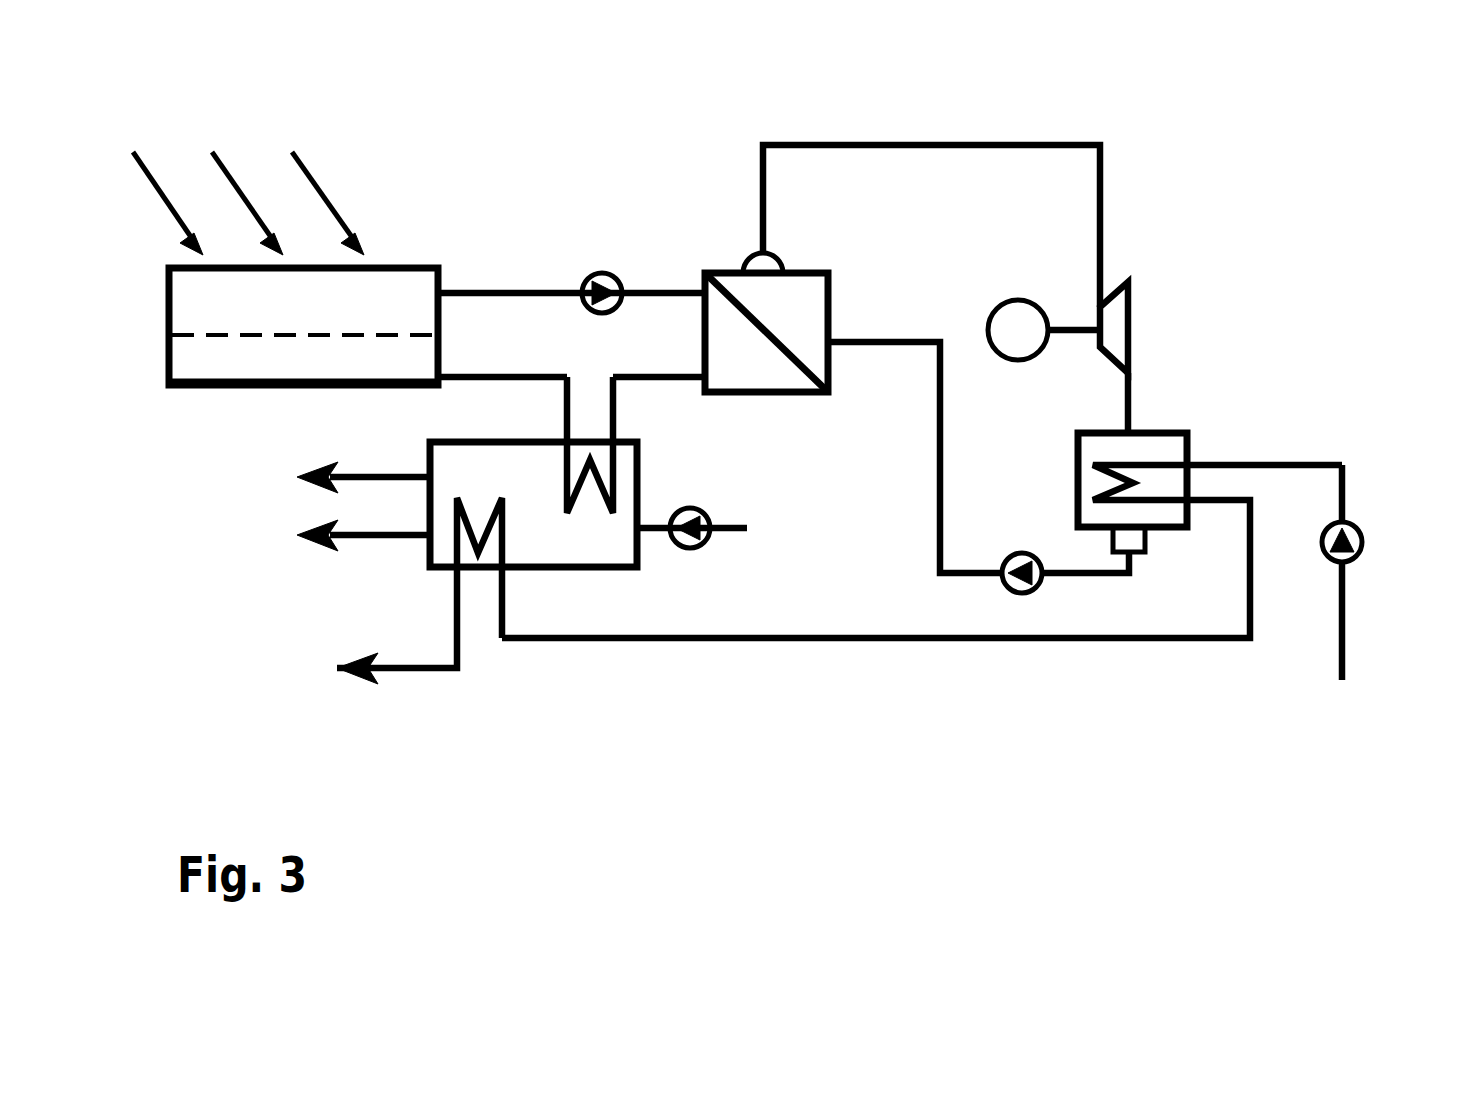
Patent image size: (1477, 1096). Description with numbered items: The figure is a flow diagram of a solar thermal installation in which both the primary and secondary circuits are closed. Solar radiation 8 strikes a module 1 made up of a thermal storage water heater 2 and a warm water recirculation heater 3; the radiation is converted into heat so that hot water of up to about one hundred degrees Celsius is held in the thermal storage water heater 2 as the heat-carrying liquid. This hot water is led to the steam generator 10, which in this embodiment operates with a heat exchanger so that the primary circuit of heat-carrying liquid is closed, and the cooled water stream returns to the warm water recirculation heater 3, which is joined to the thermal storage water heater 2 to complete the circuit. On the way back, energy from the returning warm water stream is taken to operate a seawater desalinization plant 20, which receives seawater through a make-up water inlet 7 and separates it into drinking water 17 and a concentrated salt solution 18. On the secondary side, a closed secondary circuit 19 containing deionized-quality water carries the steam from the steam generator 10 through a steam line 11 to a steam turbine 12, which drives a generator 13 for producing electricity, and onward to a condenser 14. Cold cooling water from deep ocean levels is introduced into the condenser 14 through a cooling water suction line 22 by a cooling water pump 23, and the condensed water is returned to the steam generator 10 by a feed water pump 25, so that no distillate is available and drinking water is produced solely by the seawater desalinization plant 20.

The module 1 is at (236, 422).
The thermal storage water heater 2 is at (397, 295).
The warm water recirculation heater 3 is at (212, 375).
The make-up water inlet 7 is at (647, 535).
The solar radiation 8 is at (205, 229).
The steam generator 10 is at (830, 357).
The steam line 11 is at (973, 140).
The steam turbine 12 is at (1132, 292).
The generator 13 is at (1017, 310).
The condenser 14 is at (1170, 442).
The drinking water 17 is at (377, 473).
The concentrated salt solution 18 is at (387, 542).
The closed secondary circuit 19 is at (1170, 140).
The seawater desalinization plant 20 is at (503, 491).
The cooling water suction line 22 is at (1347, 597).
The cooling water pump 23 is at (1360, 533).
The feed water pump 25 is at (1018, 552).